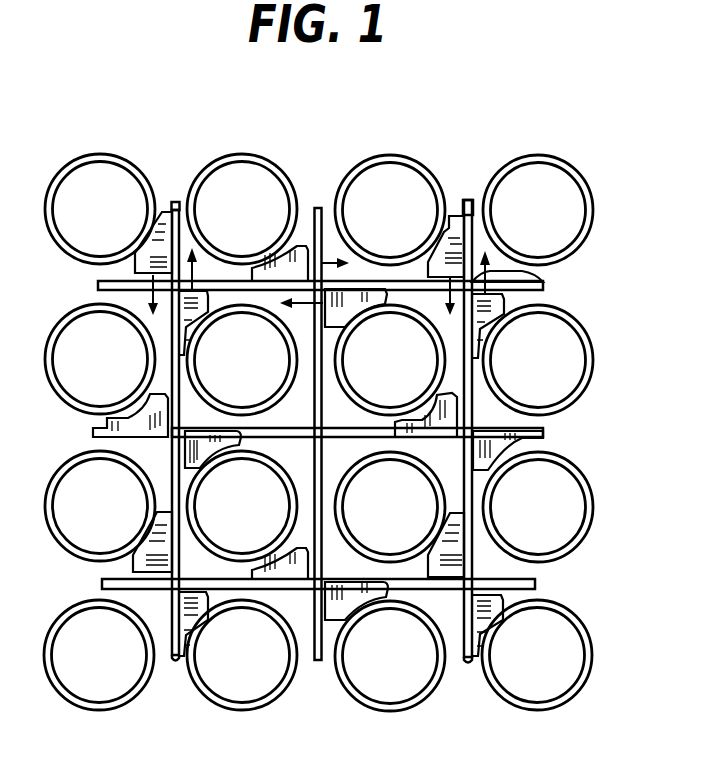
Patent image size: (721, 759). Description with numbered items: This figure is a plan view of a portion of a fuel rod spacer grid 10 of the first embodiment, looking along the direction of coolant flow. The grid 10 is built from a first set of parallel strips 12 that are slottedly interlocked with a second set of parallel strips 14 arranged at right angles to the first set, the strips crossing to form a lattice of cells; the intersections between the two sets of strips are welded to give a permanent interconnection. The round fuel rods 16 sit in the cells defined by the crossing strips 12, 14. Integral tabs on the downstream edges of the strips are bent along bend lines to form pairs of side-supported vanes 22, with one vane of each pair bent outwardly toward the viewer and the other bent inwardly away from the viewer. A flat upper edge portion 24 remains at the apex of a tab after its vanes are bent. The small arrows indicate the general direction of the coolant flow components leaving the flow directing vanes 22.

The fuel rod support grid 10 is at (155, 176).
The first set of parallel strips 12 is at (174, 201).
The second set of parallel strips 14 is at (543, 290).
The fuel rods 16 is at (110, 224).
The side-supported vanes 22 is at (453, 216).
The flat upper edge portion 24 is at (543, 277).